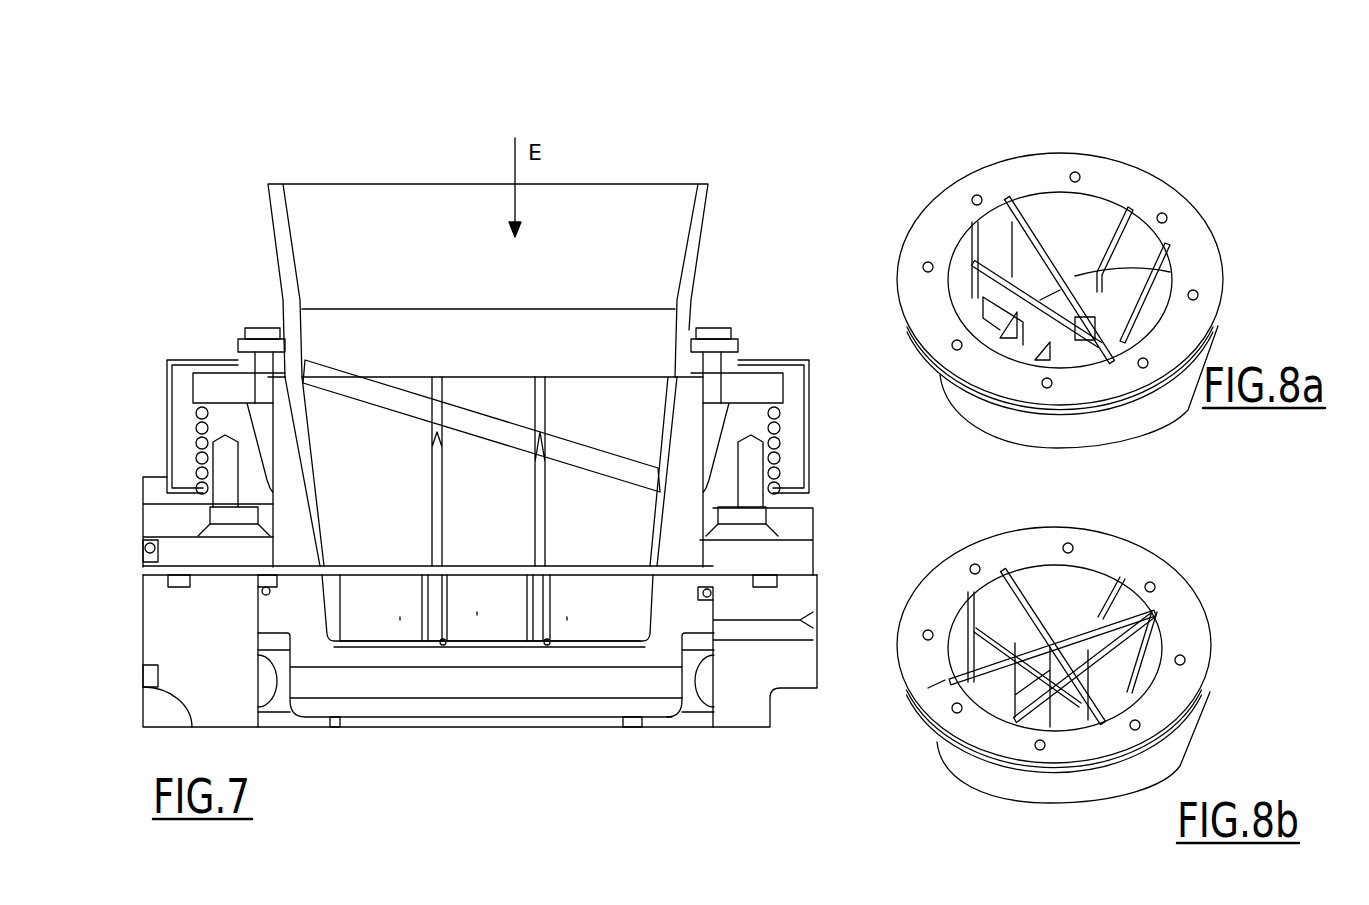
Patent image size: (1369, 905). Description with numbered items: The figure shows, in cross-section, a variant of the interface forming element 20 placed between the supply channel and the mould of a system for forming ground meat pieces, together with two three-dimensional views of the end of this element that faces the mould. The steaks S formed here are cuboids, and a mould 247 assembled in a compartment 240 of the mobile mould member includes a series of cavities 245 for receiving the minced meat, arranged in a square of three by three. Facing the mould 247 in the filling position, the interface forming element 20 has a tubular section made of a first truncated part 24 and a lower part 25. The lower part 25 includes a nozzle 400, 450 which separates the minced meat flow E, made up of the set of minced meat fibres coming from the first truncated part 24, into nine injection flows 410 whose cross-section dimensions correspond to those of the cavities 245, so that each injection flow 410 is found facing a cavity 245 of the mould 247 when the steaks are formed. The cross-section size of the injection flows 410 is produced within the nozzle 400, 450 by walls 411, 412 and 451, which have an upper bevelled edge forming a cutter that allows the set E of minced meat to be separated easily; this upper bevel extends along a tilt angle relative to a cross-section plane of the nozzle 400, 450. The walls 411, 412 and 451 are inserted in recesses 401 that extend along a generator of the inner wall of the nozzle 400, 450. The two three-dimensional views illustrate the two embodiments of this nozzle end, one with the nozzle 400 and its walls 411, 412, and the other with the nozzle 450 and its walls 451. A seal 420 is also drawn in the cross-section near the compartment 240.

In FIG. 7, the interface forming element 20 is at (277, 215).
In FIG. 7, the first truncated part 24 is at (688, 256).
In FIG. 7, the lower part 25 is at (682, 318).
In FIG. 7, the nozzle 400 is at (690, 429).
In FIG. 8a, the nozzle 400 is at (1142, 190).
In FIG. 8a, the recesses 401 is at (1150, 198).
In FIG. 8b, the recesses 401 is at (1125, 568).
In FIG. 7, the injection flows 410 is at (387, 447).
In FIG. 8a, the injection flows 410 is at (997, 363).
In FIG. 8b, the injection flows 410 is at (1000, 720).
In FIG. 7, the walls 411 is at (433, 477).
In FIG. 8a, the walls 411 is at (1038, 228).
In FIG. 8b, the walls 411 is at (1035, 597).
In FIG. 8a, the walls 412 is at (1135, 284).
In FIG. 7, the seal 420 is at (620, 593).
In FIG. 7, the compartment 240 is at (738, 670).
In FIG. 7, the cavities 245 is at (567, 617).
In FIG. 7, the mould 247 is at (658, 647).
In FIG. 8b, the nozzle 450 is at (1137, 560).
In FIG. 8b, the walls 451 is at (928, 688).